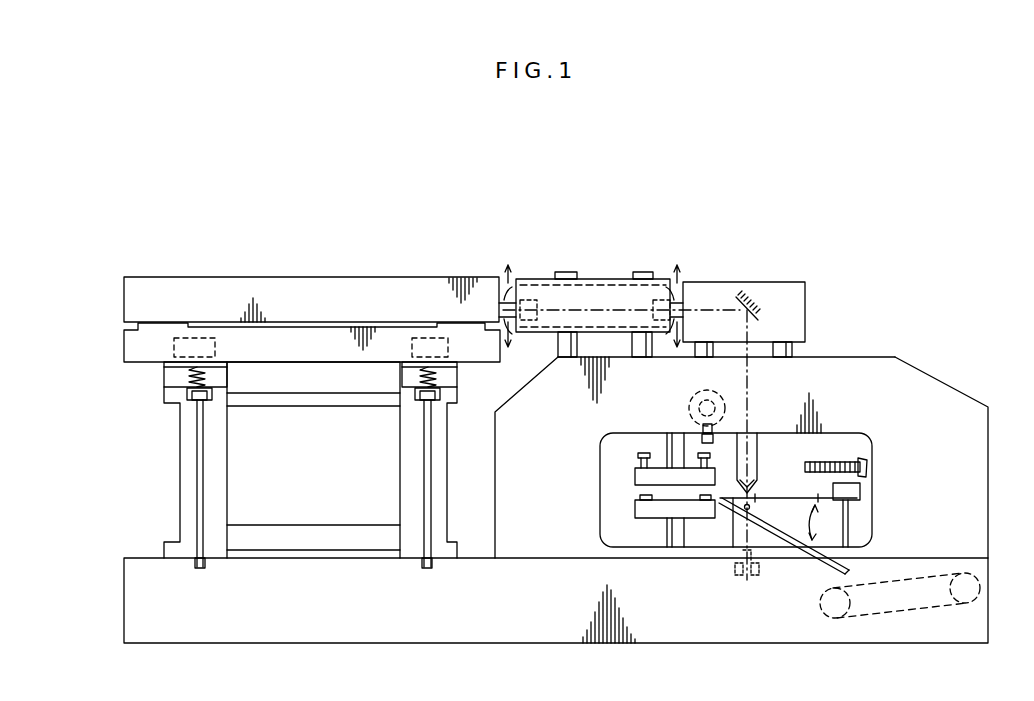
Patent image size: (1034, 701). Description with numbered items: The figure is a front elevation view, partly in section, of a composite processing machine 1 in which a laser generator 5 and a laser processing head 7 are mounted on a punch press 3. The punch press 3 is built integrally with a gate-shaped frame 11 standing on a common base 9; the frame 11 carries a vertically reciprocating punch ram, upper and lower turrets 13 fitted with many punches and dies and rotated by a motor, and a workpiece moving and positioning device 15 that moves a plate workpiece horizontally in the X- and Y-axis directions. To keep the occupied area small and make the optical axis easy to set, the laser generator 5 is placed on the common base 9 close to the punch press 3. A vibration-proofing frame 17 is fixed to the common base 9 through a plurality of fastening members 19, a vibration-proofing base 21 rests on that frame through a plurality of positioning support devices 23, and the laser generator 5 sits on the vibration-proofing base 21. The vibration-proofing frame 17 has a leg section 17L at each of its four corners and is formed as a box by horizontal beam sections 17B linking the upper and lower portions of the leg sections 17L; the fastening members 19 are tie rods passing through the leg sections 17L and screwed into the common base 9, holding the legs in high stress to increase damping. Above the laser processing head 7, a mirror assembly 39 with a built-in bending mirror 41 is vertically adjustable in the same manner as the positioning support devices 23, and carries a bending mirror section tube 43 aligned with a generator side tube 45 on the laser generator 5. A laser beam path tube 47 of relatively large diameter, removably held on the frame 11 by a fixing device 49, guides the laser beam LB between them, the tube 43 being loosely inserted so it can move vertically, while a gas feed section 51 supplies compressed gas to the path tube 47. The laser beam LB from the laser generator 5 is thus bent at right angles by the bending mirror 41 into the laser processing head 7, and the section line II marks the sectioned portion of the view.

The composite processing machine 1 is at (735, 192).
The punch press 3 is at (977, 456).
The laser generator 5 is at (387, 288).
The laser processing head 7 is at (765, 443).
The common base 9 is at (485, 637).
The gate-shaped frame 11 is at (875, 366).
The upper and lower turrets 13 is at (635, 474).
The workpiece moving and positioning device 15 is at (859, 449).
The vibration-proofing frame 17 is at (267, 460).
The horizontal beam sections 17B is at (315, 400).
The leg sections 17L is at (223, 492).
The fastening members 19 is at (200, 470).
The vibration-proofing base 21 is at (105, 335).
The positioning support devices 23 is at (168, 378).
The mirror assembly 39 is at (805, 291).
The bending mirror 41 is at (763, 305).
The bending mirror section tube 43 is at (684, 296).
The generator side tube 45 is at (493, 278).
The laser beam path tube 47 is at (618, 306).
The fixing device 49 is at (567, 347).
The gas feed section 51 is at (565, 272).
The laser beam LB is at (619, 309).
The section line II is at (135, 375).